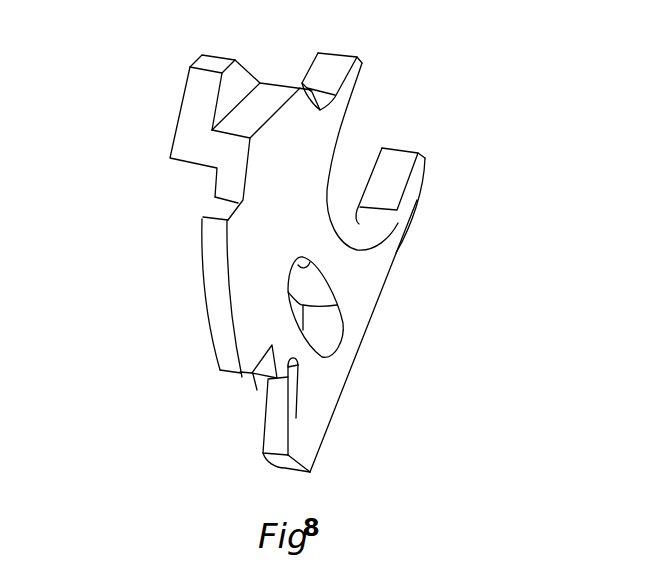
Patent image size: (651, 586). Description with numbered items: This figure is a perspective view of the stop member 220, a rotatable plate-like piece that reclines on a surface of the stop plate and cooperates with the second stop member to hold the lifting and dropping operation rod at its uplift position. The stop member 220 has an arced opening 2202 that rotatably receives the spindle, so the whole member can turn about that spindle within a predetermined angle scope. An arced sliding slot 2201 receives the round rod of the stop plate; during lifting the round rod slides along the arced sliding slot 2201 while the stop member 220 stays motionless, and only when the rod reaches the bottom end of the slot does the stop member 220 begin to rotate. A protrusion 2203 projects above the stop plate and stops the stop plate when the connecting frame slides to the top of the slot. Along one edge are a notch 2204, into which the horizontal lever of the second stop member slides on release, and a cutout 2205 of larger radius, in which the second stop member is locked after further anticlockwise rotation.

The stop member 220 is at (223, 258).
The arced sliding slot 2201 is at (300, 312).
The arced opening 2202 is at (365, 147).
The protrusion 2203 is at (212, 63).
The notch 2204 is at (268, 388).
The cutout 2205 is at (265, 368).